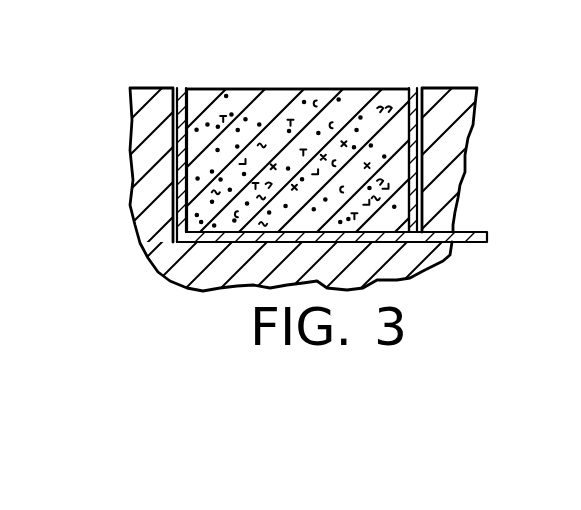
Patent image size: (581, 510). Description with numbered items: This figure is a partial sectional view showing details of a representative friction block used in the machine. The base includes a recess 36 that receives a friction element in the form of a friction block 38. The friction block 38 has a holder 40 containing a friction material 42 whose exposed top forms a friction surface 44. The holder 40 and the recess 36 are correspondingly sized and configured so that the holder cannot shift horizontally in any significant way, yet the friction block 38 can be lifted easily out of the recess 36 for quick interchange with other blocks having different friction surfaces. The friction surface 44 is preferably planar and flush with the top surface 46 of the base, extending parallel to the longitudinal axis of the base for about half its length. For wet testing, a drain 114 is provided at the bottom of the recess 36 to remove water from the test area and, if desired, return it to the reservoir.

The recess 36 is at (176, 140).
The friction block 38 is at (372, 88).
The holder 40 is at (176, 220).
The friction material 42 is at (315, 102).
The friction surface 44 is at (240, 88).
The top surface 46 is at (450, 87).
The drain 114 is at (470, 243).